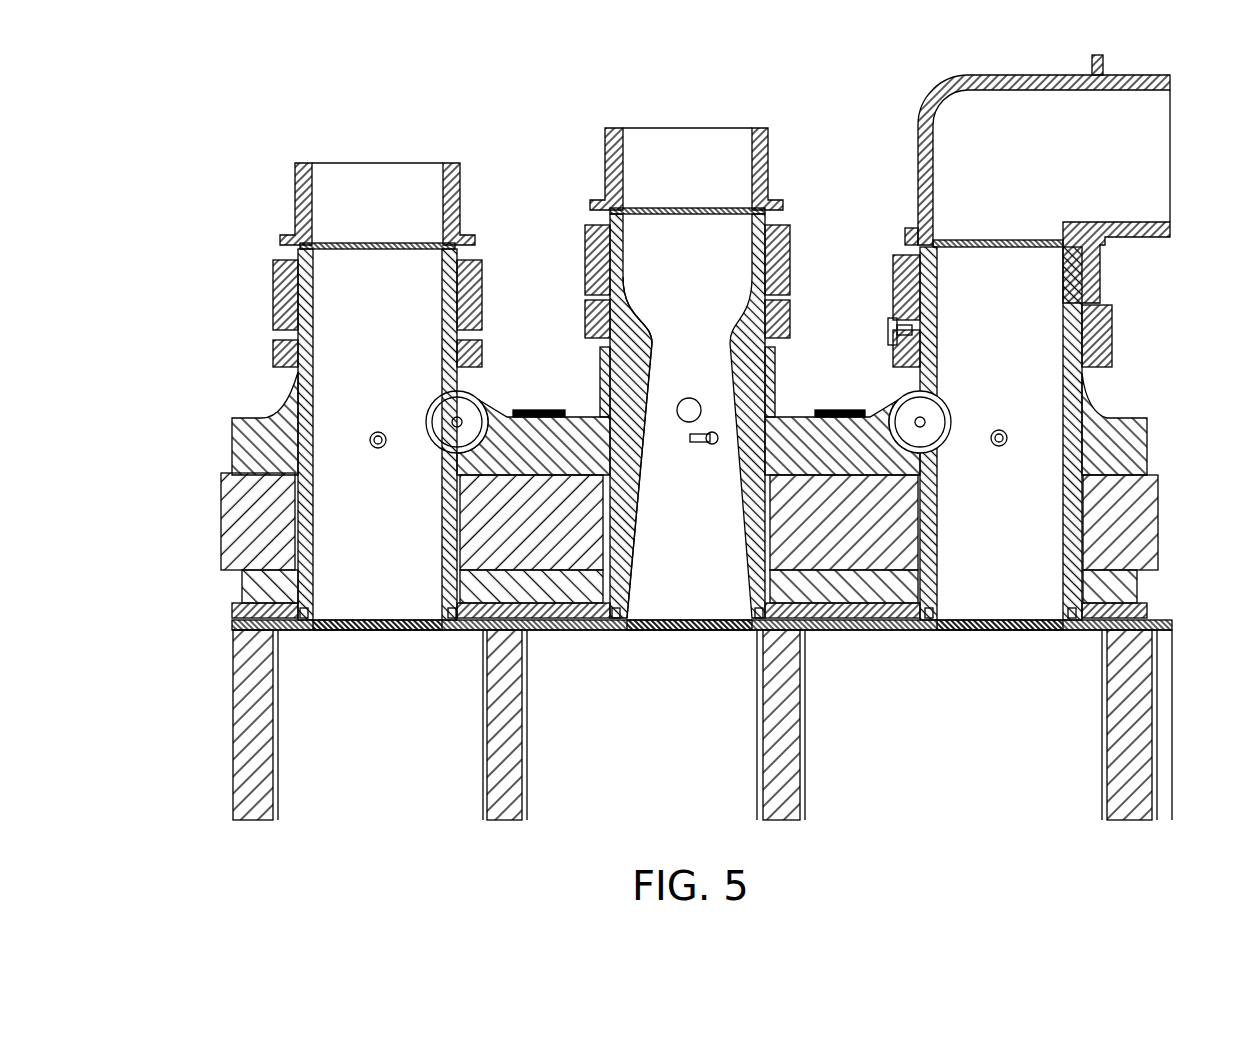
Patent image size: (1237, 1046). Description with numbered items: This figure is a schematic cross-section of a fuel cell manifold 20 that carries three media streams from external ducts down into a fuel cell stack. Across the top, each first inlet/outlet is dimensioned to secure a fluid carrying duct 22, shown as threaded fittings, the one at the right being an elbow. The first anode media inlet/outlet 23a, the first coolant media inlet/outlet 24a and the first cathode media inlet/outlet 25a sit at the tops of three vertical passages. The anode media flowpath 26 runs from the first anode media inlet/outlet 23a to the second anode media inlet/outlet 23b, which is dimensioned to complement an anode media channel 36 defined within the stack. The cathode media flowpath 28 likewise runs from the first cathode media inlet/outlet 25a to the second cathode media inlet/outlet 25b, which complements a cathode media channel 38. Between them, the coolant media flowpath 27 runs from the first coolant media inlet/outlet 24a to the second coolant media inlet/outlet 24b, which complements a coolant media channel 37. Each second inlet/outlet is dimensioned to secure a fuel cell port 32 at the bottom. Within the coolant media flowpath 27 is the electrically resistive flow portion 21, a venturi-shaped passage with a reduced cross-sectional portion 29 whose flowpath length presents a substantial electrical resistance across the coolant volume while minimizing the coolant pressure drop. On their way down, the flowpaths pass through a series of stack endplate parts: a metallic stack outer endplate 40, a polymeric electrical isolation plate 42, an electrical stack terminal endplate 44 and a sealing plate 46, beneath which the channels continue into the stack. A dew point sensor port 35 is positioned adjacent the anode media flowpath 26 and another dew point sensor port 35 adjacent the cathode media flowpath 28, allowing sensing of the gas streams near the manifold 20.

The fuel cell manifold 20 is at (205, 443).
The electrically resistive flow portion 21 is at (756, 395).
The fluid carrying duct 22 is at (458, 208).
The first anode media inlet/outlet 23a is at (355, 245).
The second anode media inlet/outlet 23b is at (358, 620).
The first coolant media inlet/outlet 24a is at (642, 210).
The second coolant media inlet/outlet 24b is at (663, 620).
The first cathode media inlet/outlet 25a is at (978, 242).
The second cathode media inlet/outlet 25b is at (973, 620).
The anode media flowpath 26 is at (357, 325).
The coolant media flowpath 27 is at (684, 325).
The cathode media flowpath 28 is at (979, 325).
The reduced cross-sectional portion 29 is at (655, 355).
The fuel cell port 32 is at (356, 632).
The dew point sensor port 35 is at (935, 412).
The anode media channel 36 is at (397, 740).
The coolant media channel 37 is at (662, 740).
The cathode media channel 38 is at (967, 740).
The metallic stack outer endplate 40 is at (1158, 530).
The polymeric electrical isolation plate 42 is at (1137, 588).
The electrical stack terminal endplate 44 is at (232, 612).
The sealing plate 46 is at (1158, 627).